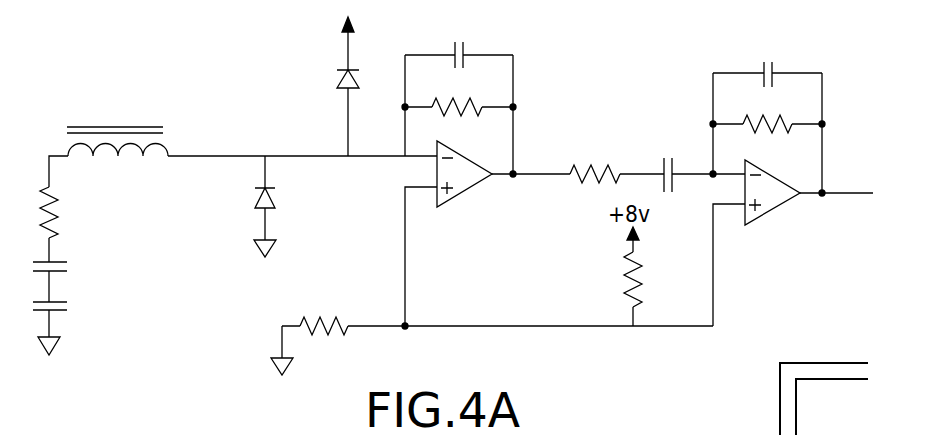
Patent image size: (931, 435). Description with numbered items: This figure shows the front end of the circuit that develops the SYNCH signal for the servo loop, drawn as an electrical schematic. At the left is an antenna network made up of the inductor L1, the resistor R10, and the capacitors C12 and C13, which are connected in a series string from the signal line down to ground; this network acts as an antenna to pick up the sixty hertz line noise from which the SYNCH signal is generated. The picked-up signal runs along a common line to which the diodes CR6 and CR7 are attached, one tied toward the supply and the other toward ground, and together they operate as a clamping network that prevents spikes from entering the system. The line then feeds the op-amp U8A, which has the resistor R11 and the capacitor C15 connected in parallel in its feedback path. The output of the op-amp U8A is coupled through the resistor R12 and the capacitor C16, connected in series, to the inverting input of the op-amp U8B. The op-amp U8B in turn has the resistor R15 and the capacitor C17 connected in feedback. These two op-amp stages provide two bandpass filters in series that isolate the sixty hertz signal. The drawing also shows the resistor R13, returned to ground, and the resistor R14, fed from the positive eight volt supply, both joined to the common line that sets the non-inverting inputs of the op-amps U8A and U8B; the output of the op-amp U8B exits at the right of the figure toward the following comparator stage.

The inductor L1 is at (70, 145).
The resistor R10 is at (58, 206).
The capacitor C12 is at (60, 262).
The capacitor C13 is at (60, 302).
The diode CR6 is at (343, 68).
The diode CR7 is at (272, 188).
The op-amp U8A is at (463, 197).
The resistor R11 is at (472, 100).
The capacitor C15 is at (465, 50).
The resistor R12 is at (608, 170).
The capacitor C16 is at (678, 167).
The op-amp U8B is at (765, 217).
The resistor R15 is at (778, 120).
The capacitor C17 is at (775, 67).
The resistor R13 is at (332, 335).
The bias resistor R14 is at (628, 270).